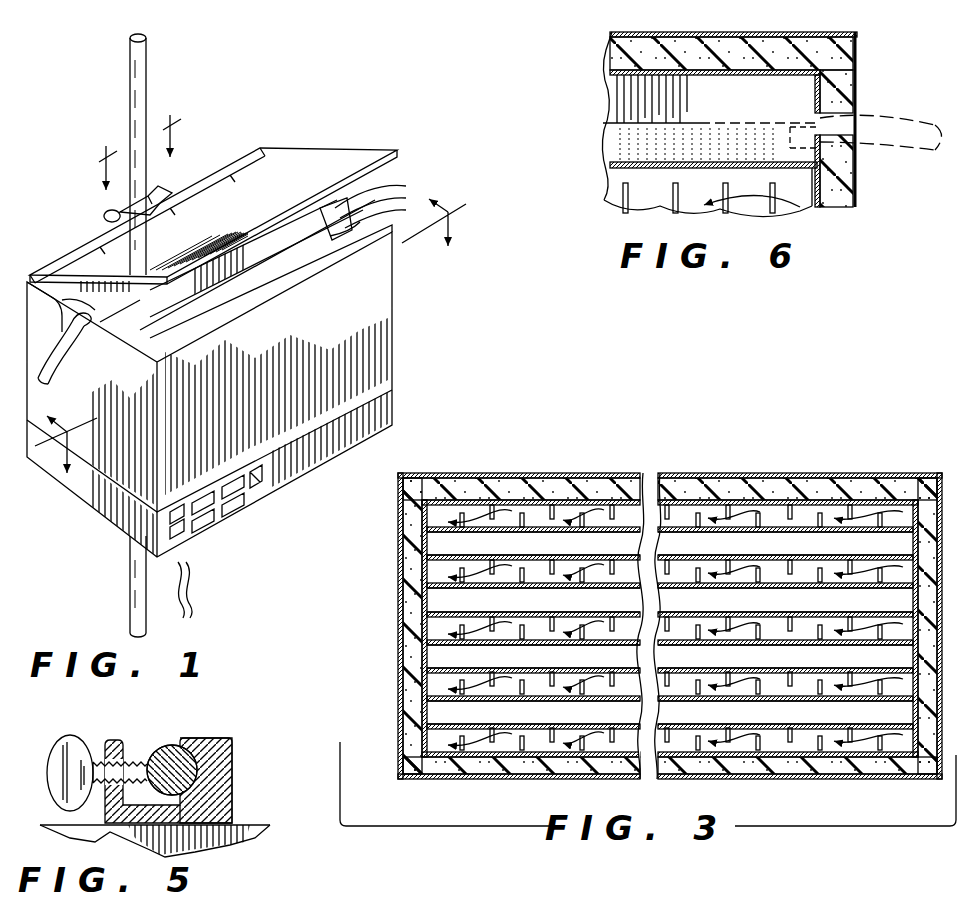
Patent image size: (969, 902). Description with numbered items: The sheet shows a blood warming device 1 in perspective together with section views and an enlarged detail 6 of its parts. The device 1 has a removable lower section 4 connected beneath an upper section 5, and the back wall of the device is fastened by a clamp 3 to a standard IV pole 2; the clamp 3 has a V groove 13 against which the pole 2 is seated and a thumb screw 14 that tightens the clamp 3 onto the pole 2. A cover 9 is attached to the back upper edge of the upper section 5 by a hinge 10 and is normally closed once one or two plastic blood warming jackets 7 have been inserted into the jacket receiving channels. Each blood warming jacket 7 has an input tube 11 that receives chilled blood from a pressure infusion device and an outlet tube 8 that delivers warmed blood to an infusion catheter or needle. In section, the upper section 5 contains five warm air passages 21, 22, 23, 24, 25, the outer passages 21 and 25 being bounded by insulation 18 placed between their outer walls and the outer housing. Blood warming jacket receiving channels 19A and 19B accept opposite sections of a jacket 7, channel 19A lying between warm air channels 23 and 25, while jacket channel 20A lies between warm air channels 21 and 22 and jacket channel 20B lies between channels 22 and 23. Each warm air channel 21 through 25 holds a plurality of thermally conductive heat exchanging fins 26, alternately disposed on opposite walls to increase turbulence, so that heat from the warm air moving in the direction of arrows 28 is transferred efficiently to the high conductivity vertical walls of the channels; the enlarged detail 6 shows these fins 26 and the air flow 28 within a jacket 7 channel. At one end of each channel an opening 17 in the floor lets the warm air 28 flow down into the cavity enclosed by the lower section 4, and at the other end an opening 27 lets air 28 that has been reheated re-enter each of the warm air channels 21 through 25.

In FIG. 1, the blood warming device 1 is at (253, 335).
In FIG. 1, the IV pole 2 is at (126, 598).
In FIG. 5, the IV pole 2 is at (160, 746).
In FIG. 1, the clamp 3 is at (165, 188).
In FIG. 5, the clamp 3 is at (188, 776).
In FIG. 1, the lower section 4 is at (395, 398).
In FIG. 1, the upper section 5 is at (380, 314).
In FIG. 5, the upper section 5 is at (238, 824).
In FIG. 1, the terminal connector 6 is at (240, 492).
In FIG. 1, the blood warming jacket 7 is at (303, 238).
In FIG. 6, the blood warming jacket 7 is at (694, 118).
In FIG. 1, the outlet tube 8 is at (66, 350).
In FIG. 1, the cover 9 is at (315, 153).
In FIG. 1, the hinge 10 is at (221, 165).
In FIG. 1, the input tube 11 is at (375, 210).
In FIG. 6, the input tube 11 is at (862, 150).
In FIG. 5, the V groove 13 is at (232, 754).
In FIG. 5, the thumb screw 14 is at (58, 745).
In FIG. 3, the opening 17 is at (437, 503).
In FIG. 3, the insulation 18 is at (850, 488).
In FIG. 3, the blood warming jacket receiving channel 19A is at (455, 651).
In FIG. 3, the blood warming jacket receiving channel 19B is at (455, 708).
In FIG. 3, the blood warming jacket channel 20A is at (455, 543).
In FIG. 3, the blood warming jacket channel 20B is at (455, 600).
In FIG. 3, the warm air passage 21 is at (805, 515).
In FIG. 3, the warm air passage 22 is at (800, 572).
In FIG. 3, the warm air passage 23 is at (805, 622).
In FIG. 3, the warm air passage 24 is at (800, 680).
In FIG. 3, the warm air passage 25 is at (800, 738).
In FIG. 3, the heat exchanging fins 26 is at (675, 627).
In FIG. 3, the opening 27 is at (672, 628).
In FIG. 3, the arrows / warm air 28 is at (675, 598).